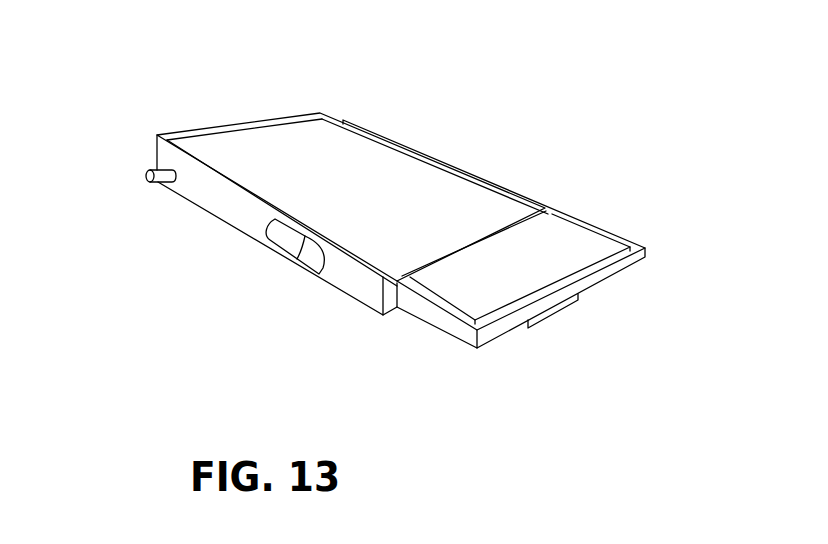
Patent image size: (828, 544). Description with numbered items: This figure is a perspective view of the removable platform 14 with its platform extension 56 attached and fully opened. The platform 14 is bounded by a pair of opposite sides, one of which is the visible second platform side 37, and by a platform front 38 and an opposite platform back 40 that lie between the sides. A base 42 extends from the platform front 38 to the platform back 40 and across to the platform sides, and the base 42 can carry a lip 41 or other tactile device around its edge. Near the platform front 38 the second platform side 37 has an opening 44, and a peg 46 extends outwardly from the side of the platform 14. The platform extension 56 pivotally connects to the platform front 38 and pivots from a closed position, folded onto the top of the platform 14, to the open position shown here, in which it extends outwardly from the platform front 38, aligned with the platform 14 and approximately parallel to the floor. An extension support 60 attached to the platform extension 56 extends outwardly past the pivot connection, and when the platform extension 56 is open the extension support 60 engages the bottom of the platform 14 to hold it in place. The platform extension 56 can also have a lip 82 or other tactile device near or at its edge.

The platform 14 is at (328, 148).
The second platform side 37 is at (232, 213).
The platform front 38 is at (393, 306).
The platform back 40 is at (245, 122).
The lip 41 is at (192, 134).
The base 42 is at (349, 206).
The opening 44 is at (323, 265).
The peg 46 is at (158, 183).
The platform extension 56 is at (535, 243).
The extension support 60 is at (566, 302).
The lip 82 is at (613, 237).